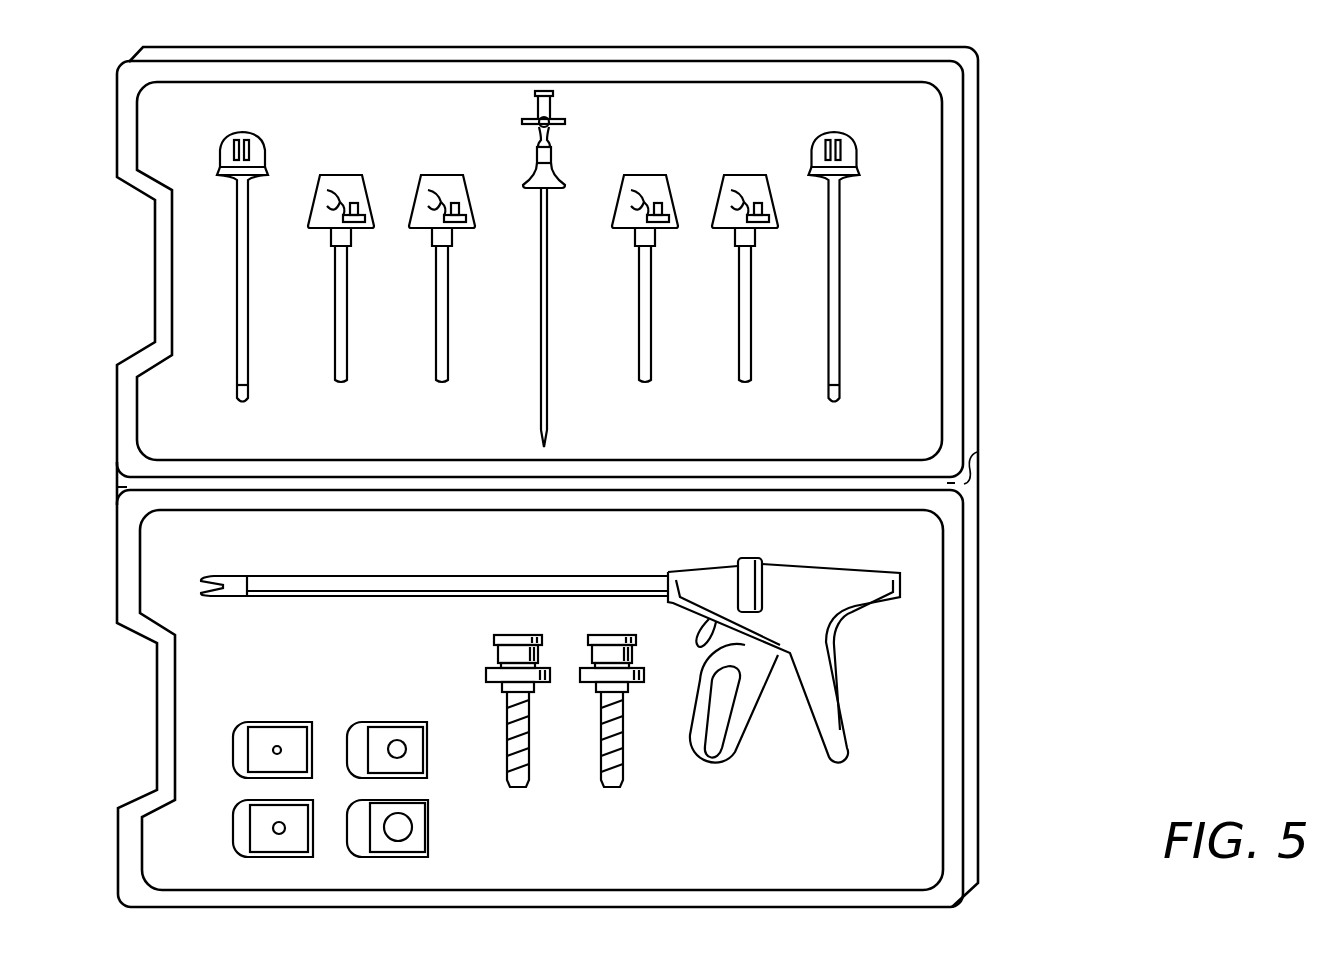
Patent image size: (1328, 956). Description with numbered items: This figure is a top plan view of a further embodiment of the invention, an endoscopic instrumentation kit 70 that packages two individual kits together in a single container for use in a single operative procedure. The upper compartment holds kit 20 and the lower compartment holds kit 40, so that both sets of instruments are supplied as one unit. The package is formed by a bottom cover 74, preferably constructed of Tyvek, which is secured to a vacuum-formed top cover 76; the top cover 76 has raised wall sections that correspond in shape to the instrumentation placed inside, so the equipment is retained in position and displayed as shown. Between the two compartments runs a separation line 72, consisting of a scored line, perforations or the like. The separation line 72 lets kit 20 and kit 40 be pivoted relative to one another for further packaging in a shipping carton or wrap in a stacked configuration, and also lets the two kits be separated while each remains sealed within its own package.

The endoscopic instrumentation kit 70 is at (997, 108).
The bottom cover 74 is at (977, 337).
The top cover 76 is at (952, 548).
The separation line 72 is at (977, 452).
The kit 20 is at (898, 260).
The kit 40 is at (910, 648).